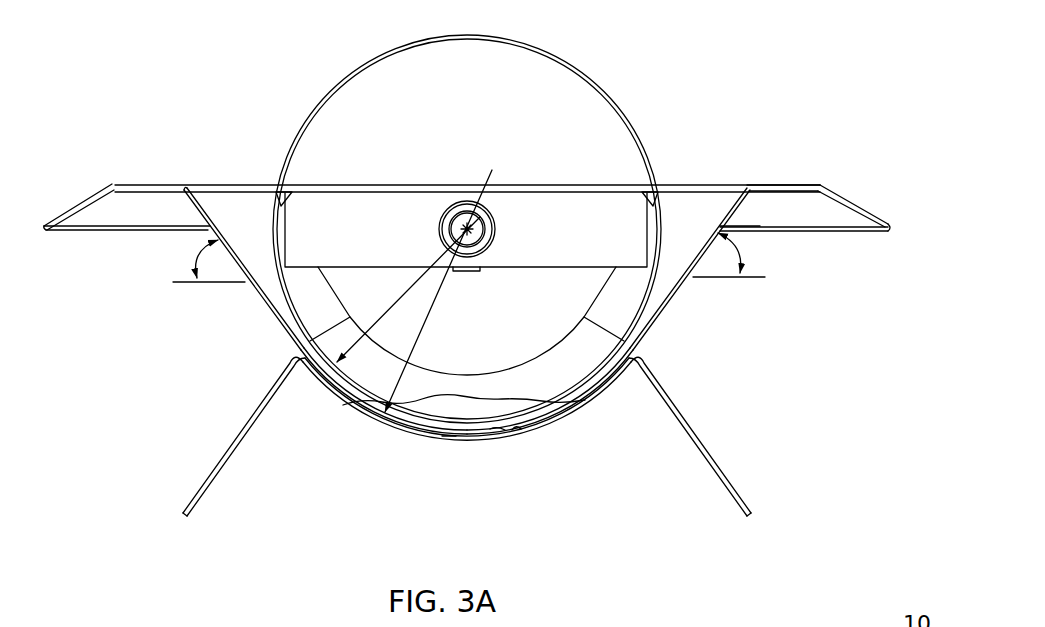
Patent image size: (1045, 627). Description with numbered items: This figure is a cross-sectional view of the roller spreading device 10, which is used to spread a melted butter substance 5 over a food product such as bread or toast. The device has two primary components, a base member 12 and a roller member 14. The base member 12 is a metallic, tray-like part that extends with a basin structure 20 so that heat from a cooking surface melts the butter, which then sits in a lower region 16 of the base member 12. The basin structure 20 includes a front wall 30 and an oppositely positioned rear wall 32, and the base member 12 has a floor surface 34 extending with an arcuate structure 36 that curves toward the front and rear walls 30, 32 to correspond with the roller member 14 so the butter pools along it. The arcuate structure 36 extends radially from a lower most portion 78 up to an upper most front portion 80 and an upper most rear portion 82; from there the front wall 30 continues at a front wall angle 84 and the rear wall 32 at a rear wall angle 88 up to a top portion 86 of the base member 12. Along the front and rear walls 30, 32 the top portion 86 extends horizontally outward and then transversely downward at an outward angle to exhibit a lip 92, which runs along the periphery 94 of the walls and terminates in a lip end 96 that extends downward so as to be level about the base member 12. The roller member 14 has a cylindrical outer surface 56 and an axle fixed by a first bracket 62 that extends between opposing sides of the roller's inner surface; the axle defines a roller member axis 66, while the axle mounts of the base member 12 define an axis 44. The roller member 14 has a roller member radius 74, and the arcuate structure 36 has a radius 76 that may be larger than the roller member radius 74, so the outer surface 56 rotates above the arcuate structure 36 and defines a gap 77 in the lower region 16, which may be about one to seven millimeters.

The roller spreading device 10 is at (792, 48).
The roller member 14 is at (568, 50).
The cylindrical outer surface 56 is at (612, 100).
The first bracket 62 is at (615, 220).
The axis 44 is at (477, 217).
The roller member axis 66 is at (477, 217).
The roller member radius 74 is at (413, 280).
The radius of the arcuate structure 76 is at (441, 295).
The melted butter substance 5 is at (415, 399).
The front wall 30 is at (220, 230).
The rear wall 32 is at (720, 227).
The top portion 86 is at (803, 185).
The periphery 94 is at (862, 193).
The lip 92 is at (871, 210).
The lip end 96 is at (900, 229).
The base member 12 is at (256, 290).
The basin structure 20 is at (683, 298).
The upper most front portion 80 is at (300, 336).
The upper most rear portion 82 is at (634, 341).
The front wall angle 84 is at (203, 257).
The rear wall angle 88 is at (741, 252).
The lower region 16 is at (561, 430).
The arcuate structure 36 is at (383, 428).
The floor surface 34 is at (518, 430).
The gap 77 is at (497, 431).
The lower most portion 78 is at (448, 438).